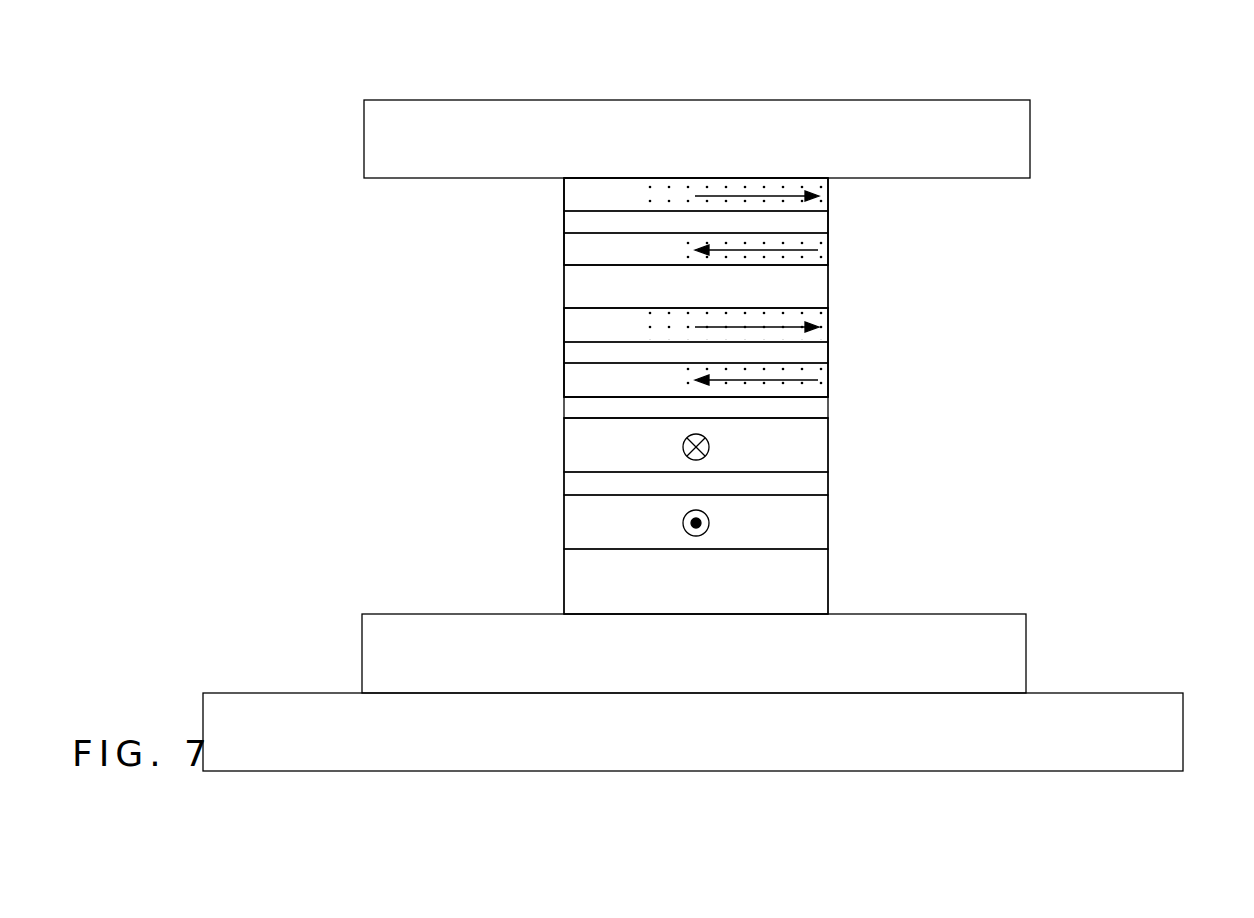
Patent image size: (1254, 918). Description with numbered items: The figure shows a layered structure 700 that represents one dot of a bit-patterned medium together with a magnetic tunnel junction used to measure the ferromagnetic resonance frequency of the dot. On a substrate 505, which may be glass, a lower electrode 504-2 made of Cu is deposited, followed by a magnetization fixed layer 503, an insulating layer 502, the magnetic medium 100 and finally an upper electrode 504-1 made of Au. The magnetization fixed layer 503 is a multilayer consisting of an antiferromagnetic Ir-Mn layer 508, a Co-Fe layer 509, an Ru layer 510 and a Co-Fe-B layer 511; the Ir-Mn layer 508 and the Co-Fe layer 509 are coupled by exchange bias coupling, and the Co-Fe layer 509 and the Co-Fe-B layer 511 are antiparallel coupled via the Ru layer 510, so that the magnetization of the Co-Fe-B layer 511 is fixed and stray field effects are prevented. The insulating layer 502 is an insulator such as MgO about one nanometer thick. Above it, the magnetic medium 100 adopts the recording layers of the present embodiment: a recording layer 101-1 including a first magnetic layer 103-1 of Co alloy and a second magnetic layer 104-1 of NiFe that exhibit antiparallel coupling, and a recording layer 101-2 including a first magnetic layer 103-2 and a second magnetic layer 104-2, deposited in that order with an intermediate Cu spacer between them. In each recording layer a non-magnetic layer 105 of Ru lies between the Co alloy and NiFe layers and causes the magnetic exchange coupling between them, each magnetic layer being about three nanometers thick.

The layered structure 700 is at (716, 71).
The upper electrode 504-1 is at (1024, 150).
The lower electrode 504-2 is at (1018, 659).
The substrate 505 is at (1172, 741).
The magnetic medium 100 is at (840, 183).
The recording layer 101-1 is at (478, 183).
The recording layer 101-2 is at (478, 310).
The second magnetic layer 104-1 is at (566, 193).
The second magnetic layer 104-2 is at (566, 321).
The non-magnetic layer 105 is at (566, 222).
The first magnetic layer 103-1 is at (566, 249).
The first magnetic layer 103-2 is at (566, 377).
The insulating layer 502 is at (818, 410).
The magnetization fixed layer 503 is at (840, 418).
The Co-Fe-B layer 511 is at (566, 443).
The Ru layer 510 is at (566, 483).
The Co-Fe layer 509 is at (566, 519).
The Ir-Mn layer 508 is at (566, 583).